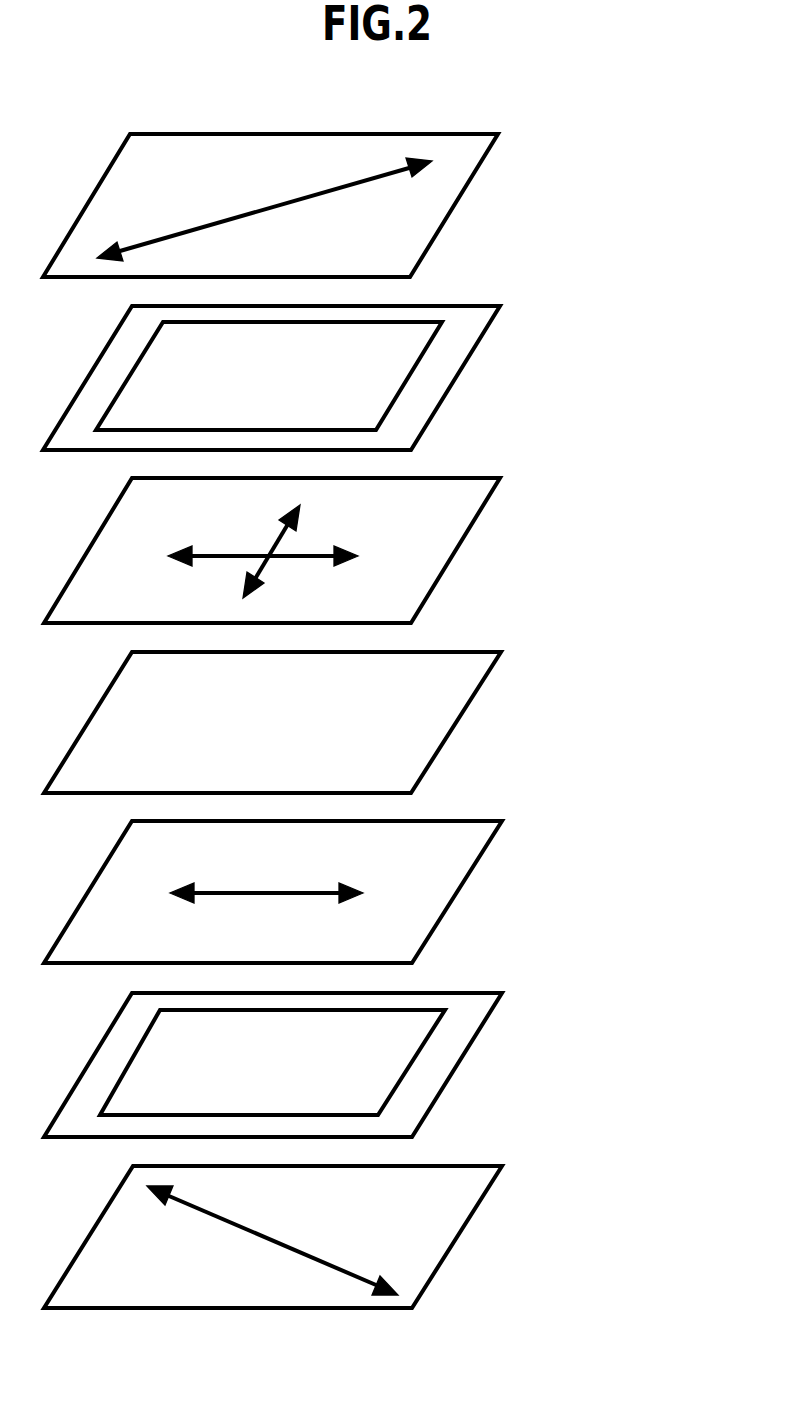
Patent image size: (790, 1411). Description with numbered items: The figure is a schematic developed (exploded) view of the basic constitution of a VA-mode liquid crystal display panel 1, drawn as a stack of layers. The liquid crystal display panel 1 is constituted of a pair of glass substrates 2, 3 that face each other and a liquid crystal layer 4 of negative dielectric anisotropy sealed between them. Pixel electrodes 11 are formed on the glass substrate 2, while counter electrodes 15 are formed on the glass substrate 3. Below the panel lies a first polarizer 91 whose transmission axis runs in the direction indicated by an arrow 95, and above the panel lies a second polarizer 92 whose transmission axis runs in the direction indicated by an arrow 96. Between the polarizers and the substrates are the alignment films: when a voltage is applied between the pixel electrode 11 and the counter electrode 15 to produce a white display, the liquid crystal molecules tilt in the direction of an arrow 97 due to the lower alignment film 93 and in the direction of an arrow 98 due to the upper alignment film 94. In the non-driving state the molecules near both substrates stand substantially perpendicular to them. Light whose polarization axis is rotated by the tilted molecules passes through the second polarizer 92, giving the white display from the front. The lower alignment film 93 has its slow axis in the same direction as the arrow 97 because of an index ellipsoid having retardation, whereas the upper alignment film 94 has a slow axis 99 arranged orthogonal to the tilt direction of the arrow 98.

The liquid crystal display panel 1 is at (523, 690).
The glass substrate 2 is at (447, 1038).
The glass substrate 3 is at (413, 412).
The liquid crystal layer 4 is at (427, 730).
The pixel electrode 11 is at (350, 1098).
The counter electrode 15 is at (385, 348).
The first polarizer 91 is at (420, 1227).
The second polarizer 92 is at (420, 235).
The lower alignment film 93 is at (413, 903).
The upper alignment film 94 is at (395, 562).
The arrow 95 is at (377, 1277).
The arrow 96 is at (413, 175).
The arrow 97 is at (310, 883).
The arrow 98 is at (318, 562).
The slow axis 99 is at (283, 537).